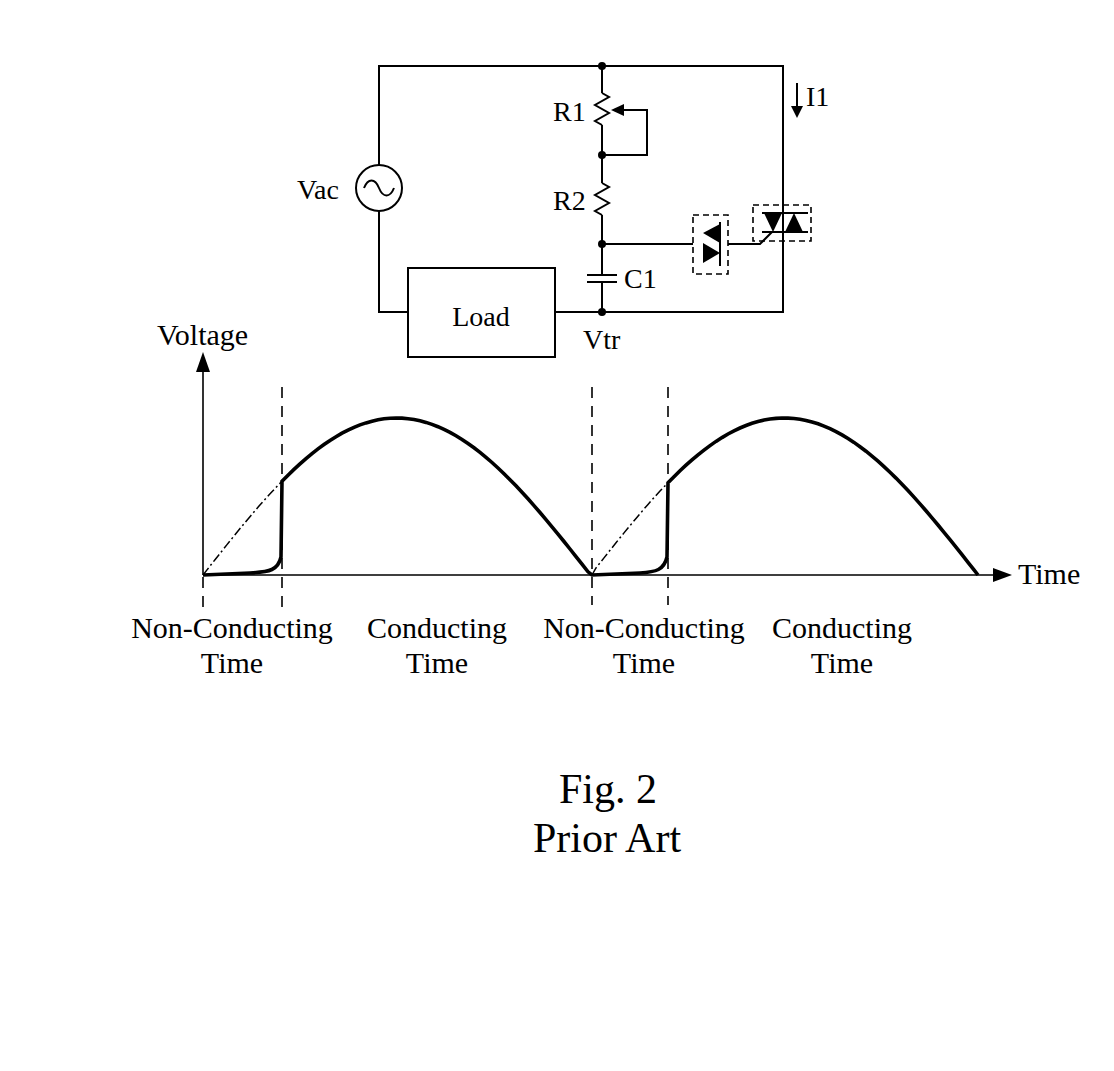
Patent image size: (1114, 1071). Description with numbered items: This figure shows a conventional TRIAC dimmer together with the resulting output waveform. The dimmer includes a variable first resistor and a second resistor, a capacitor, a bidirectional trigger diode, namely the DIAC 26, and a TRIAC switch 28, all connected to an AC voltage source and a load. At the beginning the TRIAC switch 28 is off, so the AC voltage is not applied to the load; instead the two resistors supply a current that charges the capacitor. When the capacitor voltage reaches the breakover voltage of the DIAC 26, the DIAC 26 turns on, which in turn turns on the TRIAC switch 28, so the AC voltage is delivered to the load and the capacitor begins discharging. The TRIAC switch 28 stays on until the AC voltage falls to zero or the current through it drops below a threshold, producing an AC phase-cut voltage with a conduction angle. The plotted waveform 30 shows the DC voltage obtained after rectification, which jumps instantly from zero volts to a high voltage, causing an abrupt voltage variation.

The bidirectional trigger diode (DIAC) 26 is at (708, 215).
The TRIAC switch 28 is at (800, 205).
The waveform 30 is at (793, 418).